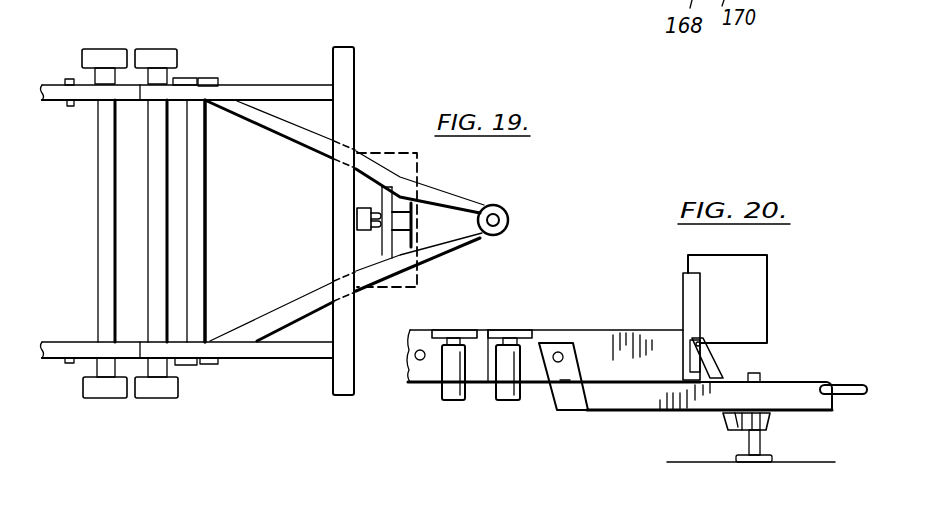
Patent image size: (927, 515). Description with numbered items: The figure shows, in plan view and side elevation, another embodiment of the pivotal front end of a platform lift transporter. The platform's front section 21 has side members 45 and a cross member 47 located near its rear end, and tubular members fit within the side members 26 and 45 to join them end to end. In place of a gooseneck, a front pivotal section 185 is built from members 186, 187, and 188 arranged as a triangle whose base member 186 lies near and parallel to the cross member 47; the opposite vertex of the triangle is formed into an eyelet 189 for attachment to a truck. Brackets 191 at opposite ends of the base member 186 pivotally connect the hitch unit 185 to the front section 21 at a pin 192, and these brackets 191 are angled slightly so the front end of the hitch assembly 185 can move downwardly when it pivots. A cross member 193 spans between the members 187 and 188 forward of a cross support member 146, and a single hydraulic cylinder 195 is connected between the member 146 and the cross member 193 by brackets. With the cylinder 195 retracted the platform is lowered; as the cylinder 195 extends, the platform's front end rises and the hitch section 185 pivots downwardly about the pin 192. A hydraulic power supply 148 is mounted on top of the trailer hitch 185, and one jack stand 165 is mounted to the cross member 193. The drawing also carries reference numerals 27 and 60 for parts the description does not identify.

In FIG. 19, the front section 21 is at (284, 80).
In FIG. 19, the side members 26 is at (52, 100).
In FIG. 20, the side members 26 is at (415, 369).
In FIG. 19, the leg member 27 is at (98, 208).
In FIG. 19, the side members 45 is at (228, 352).
In FIG. 20, the side members 45 is at (664, 333).
In FIG. 19, the cross member 47 is at (160, 207).
In FIG. 19, the caster wheel 60 is at (150, 47).
In FIG. 20, the caster wheel 60 is at (498, 404).
In FIG. 19, the cross support member 146 is at (337, 259).
In FIG. 20, the hydraulic power source 148 is at (757, 283).
In FIG. 20, the jack stand 165 is at (764, 426).
In FIG. 19, the front pivotal section 185 is at (366, 148).
In FIG. 20, the front pivotal section 185 is at (680, 422).
In FIG. 19, the base member 186 is at (196, 244).
In FIG. 19, the member 187 is at (296, 137).
In FIG. 19, the member 188 is at (265, 316).
In FIG. 20, the member 188 is at (620, 404).
In FIG. 19, the eyelet 189 is at (498, 205).
In FIG. 20, the eyelet 189 is at (853, 385).
In FIG. 19, the brackets 191 is at (205, 83).
In FIG. 20, the brackets 191 is at (563, 394).
In FIG. 19, the pin 192 is at (183, 78).
In FIG. 20, the pin 192 is at (562, 344).
In FIG. 19, the cross member 193 is at (440, 197).
In FIG. 19, the hydraulic cylinder 195 is at (358, 206).
In FIG. 20, the hydraulic cylinder 195 is at (704, 350).